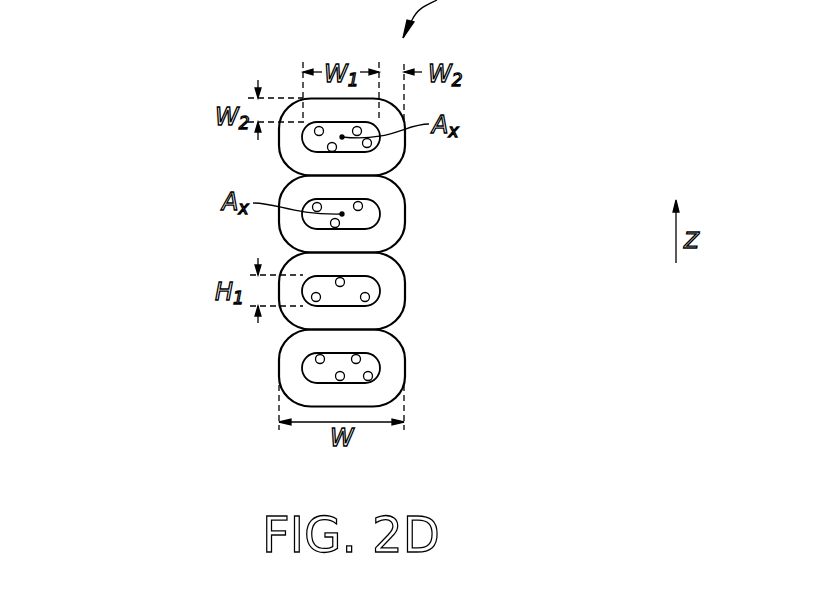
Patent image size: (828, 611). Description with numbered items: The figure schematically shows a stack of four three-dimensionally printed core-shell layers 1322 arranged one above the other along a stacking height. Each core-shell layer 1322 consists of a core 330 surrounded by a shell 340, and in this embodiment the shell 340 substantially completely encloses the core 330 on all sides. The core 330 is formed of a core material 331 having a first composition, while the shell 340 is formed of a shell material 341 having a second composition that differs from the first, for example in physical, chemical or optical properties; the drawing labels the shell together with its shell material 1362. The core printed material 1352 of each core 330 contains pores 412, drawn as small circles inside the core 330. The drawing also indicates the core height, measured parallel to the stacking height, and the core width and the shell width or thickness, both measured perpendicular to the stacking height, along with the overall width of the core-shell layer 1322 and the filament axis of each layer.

The core-shell layer 1322 is at (167, 138).
The pores 412 is at (378, 210).
The shell 340 is at (473, 291).
The shell material 341 is at (473, 291).
The cell 1362 is at (392, 289).
The core 330 is at (459, 368).
The core material 331 is at (459, 368).
The core printed material 1352 is at (363, 367).